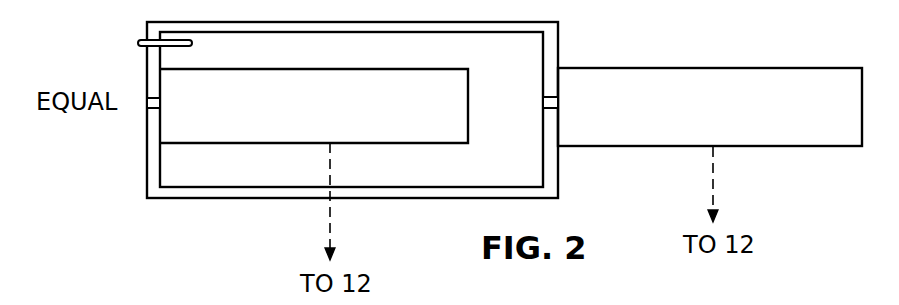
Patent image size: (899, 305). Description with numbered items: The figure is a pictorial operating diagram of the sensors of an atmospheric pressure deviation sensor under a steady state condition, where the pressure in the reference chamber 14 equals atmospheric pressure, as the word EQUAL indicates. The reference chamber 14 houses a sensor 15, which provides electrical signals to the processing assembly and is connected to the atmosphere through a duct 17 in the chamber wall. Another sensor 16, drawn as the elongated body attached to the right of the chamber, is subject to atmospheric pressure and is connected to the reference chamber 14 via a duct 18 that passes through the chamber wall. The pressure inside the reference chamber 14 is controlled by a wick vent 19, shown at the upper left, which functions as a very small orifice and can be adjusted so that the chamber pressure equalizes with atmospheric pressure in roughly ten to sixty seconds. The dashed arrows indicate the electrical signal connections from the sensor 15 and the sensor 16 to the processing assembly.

The reference chamber 14 is at (558, 22).
The sensor 15 is at (468, 69).
The sensor 16 is at (812, 68).
The duct 17 is at (147, 100).
The duct 18 is at (543, 100).
The wick vent 19 is at (140, 42).